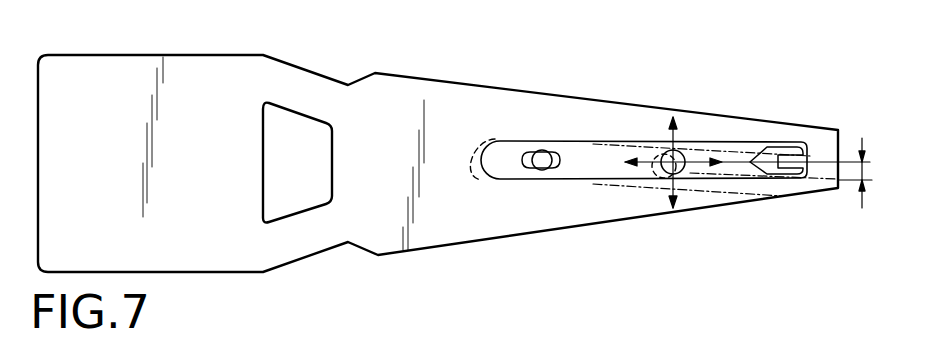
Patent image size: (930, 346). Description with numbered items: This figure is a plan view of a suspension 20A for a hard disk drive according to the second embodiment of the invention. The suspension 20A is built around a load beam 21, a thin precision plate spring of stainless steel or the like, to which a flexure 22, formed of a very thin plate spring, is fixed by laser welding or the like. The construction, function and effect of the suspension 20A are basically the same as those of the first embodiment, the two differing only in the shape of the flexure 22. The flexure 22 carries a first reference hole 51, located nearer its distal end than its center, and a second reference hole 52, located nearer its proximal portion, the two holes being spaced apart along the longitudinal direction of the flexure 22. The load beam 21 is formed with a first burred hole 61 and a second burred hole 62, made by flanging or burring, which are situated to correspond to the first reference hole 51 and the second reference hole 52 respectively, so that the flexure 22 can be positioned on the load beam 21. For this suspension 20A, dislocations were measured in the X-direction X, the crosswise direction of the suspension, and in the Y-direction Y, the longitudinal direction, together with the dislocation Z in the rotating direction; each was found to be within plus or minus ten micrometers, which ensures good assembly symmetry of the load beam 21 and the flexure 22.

The suspension 20A is at (557, 84).
The load beam 21 is at (440, 100).
The flexure 22 is at (740, 142).
The first reference hole 51 is at (663, 153).
The first burred hole 61 is at (680, 151).
The second reference hole 52 is at (528, 166).
The second burred hole 62 is at (550, 168).
The X-direction X is at (679, 177).
The Y-direction Y is at (703, 168).
The dislocation in the rotating direction Z is at (866, 173).